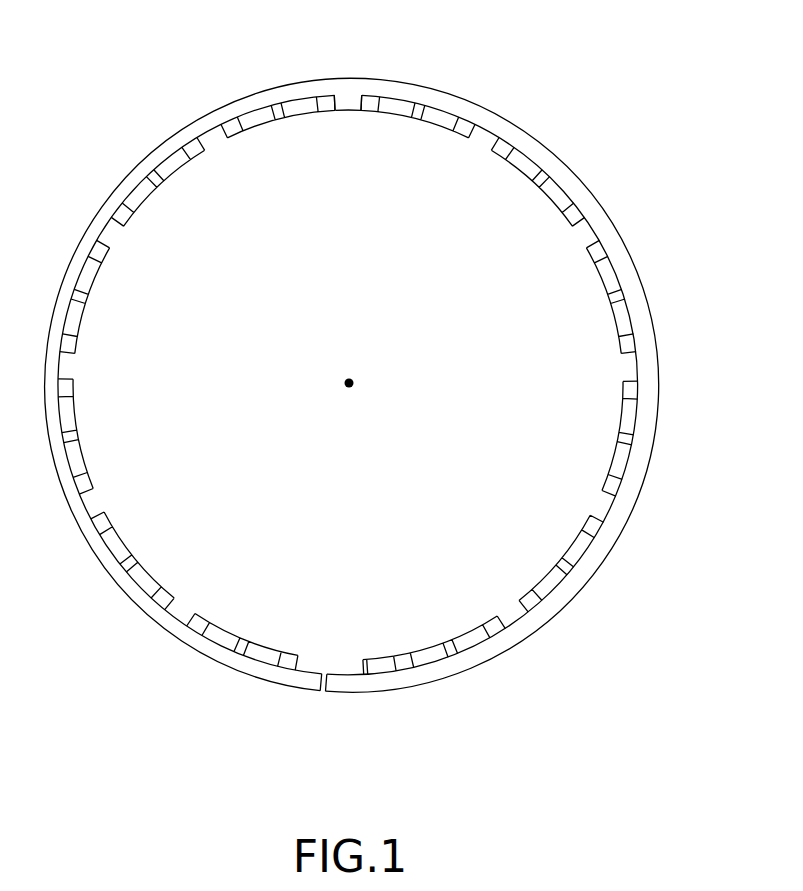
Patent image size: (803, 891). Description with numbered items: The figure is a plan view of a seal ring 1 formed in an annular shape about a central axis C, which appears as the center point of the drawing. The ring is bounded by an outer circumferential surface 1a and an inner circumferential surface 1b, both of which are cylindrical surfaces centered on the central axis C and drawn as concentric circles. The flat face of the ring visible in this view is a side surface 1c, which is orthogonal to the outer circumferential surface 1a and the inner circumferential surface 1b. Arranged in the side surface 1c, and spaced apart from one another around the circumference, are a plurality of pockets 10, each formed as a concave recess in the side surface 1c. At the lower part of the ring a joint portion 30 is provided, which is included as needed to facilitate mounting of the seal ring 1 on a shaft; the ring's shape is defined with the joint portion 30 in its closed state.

The seal ring 1 is at (521, 88).
The outer circumferential surface 1a is at (604, 230).
The inner circumferential surface 1b is at (584, 240).
The side surface 1c is at (352, 94).
The pocket 10 is at (409, 135).
The joint portion 30 is at (318, 714).
The central axis C is at (349, 401).